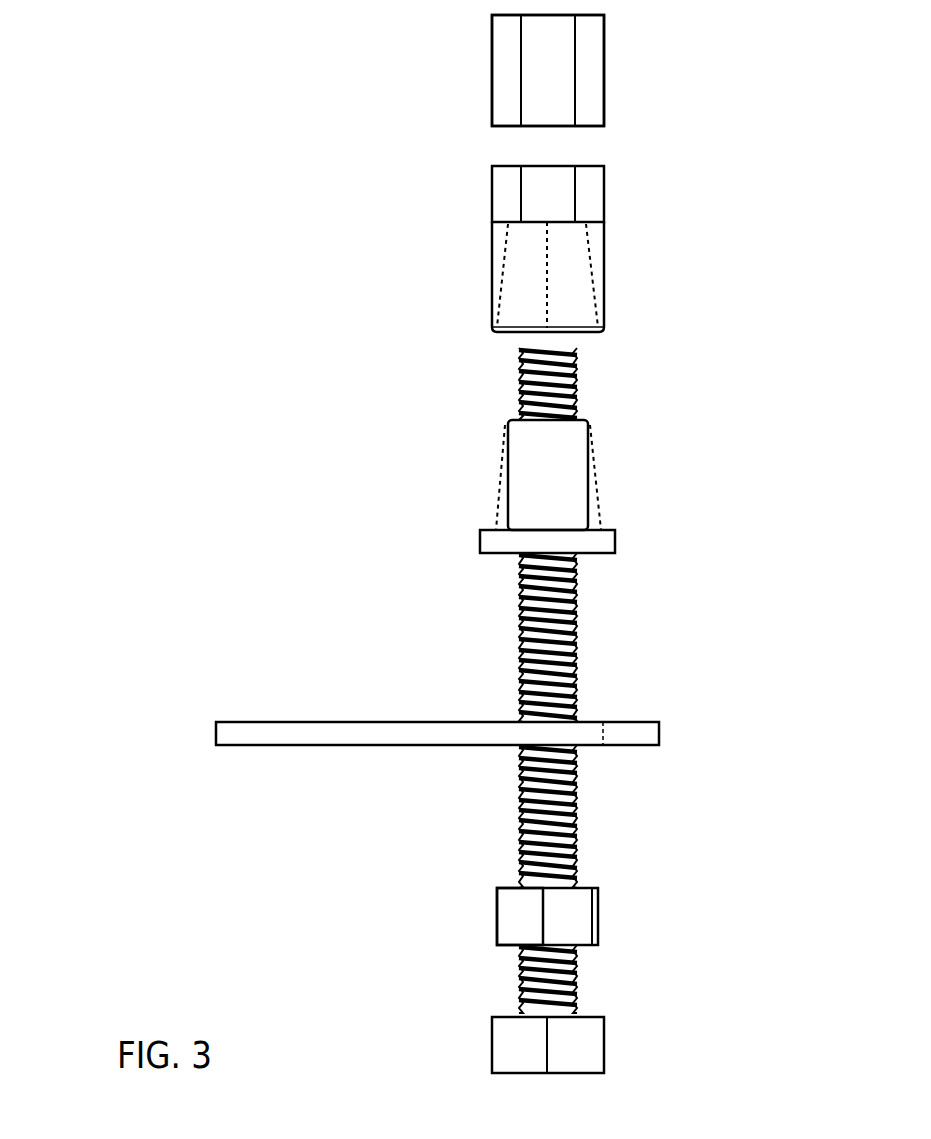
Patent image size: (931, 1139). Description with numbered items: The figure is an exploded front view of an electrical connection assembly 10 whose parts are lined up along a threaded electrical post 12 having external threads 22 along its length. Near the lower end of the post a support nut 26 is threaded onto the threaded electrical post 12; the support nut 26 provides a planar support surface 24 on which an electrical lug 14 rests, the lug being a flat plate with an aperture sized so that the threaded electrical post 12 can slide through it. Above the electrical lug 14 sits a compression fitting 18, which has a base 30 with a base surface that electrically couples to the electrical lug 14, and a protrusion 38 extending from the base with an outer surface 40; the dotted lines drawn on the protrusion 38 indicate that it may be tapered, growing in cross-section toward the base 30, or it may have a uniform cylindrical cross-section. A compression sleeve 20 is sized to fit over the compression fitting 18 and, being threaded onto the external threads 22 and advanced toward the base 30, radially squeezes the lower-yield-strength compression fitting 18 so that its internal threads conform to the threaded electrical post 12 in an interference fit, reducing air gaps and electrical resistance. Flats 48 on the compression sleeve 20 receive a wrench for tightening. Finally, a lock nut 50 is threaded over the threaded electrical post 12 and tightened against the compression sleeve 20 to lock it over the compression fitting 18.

The electrical connection assembly 10 is at (256, 266).
The threaded electrical post 12 is at (575, 668).
The electrical lug 14 is at (276, 732).
The compression fitting 18 is at (541, 479).
The compression sleeve 20 is at (520, 305).
The external threads 22 is at (520, 987).
The planar support surface 24 is at (588, 885).
The support nut 26 is at (508, 911).
The base 30 is at (585, 553).
The protrusion 38 is at (521, 516).
The outer surface 40 is at (521, 457).
The flats 48 is at (590, 205).
The lock nut 50 is at (525, 80).